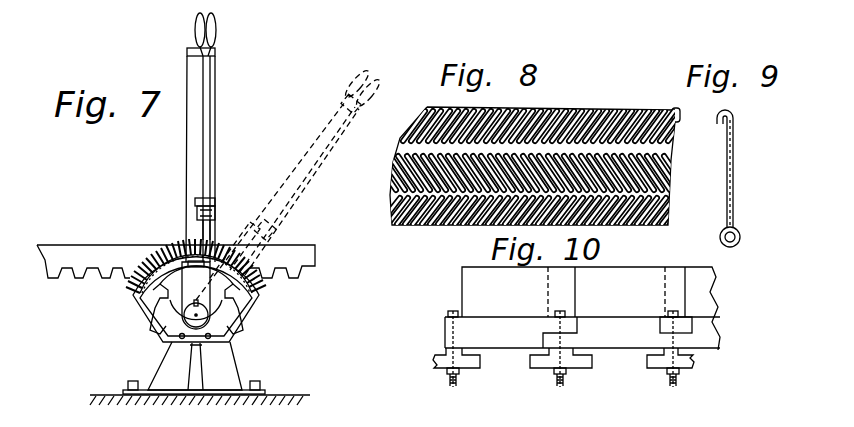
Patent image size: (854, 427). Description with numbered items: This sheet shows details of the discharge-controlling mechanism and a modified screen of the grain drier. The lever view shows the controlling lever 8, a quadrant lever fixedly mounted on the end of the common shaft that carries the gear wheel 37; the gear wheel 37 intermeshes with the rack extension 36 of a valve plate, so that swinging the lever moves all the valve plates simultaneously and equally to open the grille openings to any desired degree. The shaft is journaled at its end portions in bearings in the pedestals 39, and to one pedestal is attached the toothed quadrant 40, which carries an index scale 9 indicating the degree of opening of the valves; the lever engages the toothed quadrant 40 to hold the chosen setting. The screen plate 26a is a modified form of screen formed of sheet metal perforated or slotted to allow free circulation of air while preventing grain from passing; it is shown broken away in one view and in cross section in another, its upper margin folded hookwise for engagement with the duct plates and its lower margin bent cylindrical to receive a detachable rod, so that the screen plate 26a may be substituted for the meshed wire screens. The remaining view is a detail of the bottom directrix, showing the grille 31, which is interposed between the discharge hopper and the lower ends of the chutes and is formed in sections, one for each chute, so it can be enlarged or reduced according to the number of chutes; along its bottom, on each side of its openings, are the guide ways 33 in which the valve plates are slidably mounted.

In FIG. 7, the controlling lever 8 is at (216, 133).
In FIG. 7, the index scale 9 is at (187, 243).
In FIG. 7, the rack extension 36 is at (105, 254).
In FIG. 7, the gear wheel 37 is at (158, 286).
In FIG. 7, the pedestal 39 is at (222, 360).
In FIG. 7, the toothed quadrant 40 is at (262, 284).
In FIG. 8, the screen plate 26a is at (593, 112).
In FIG. 9, the screen plate 26a is at (735, 163).
In FIG. 10, the grille 31 is at (633, 288).
In FIG. 10, the guide ways 33 is at (468, 357).